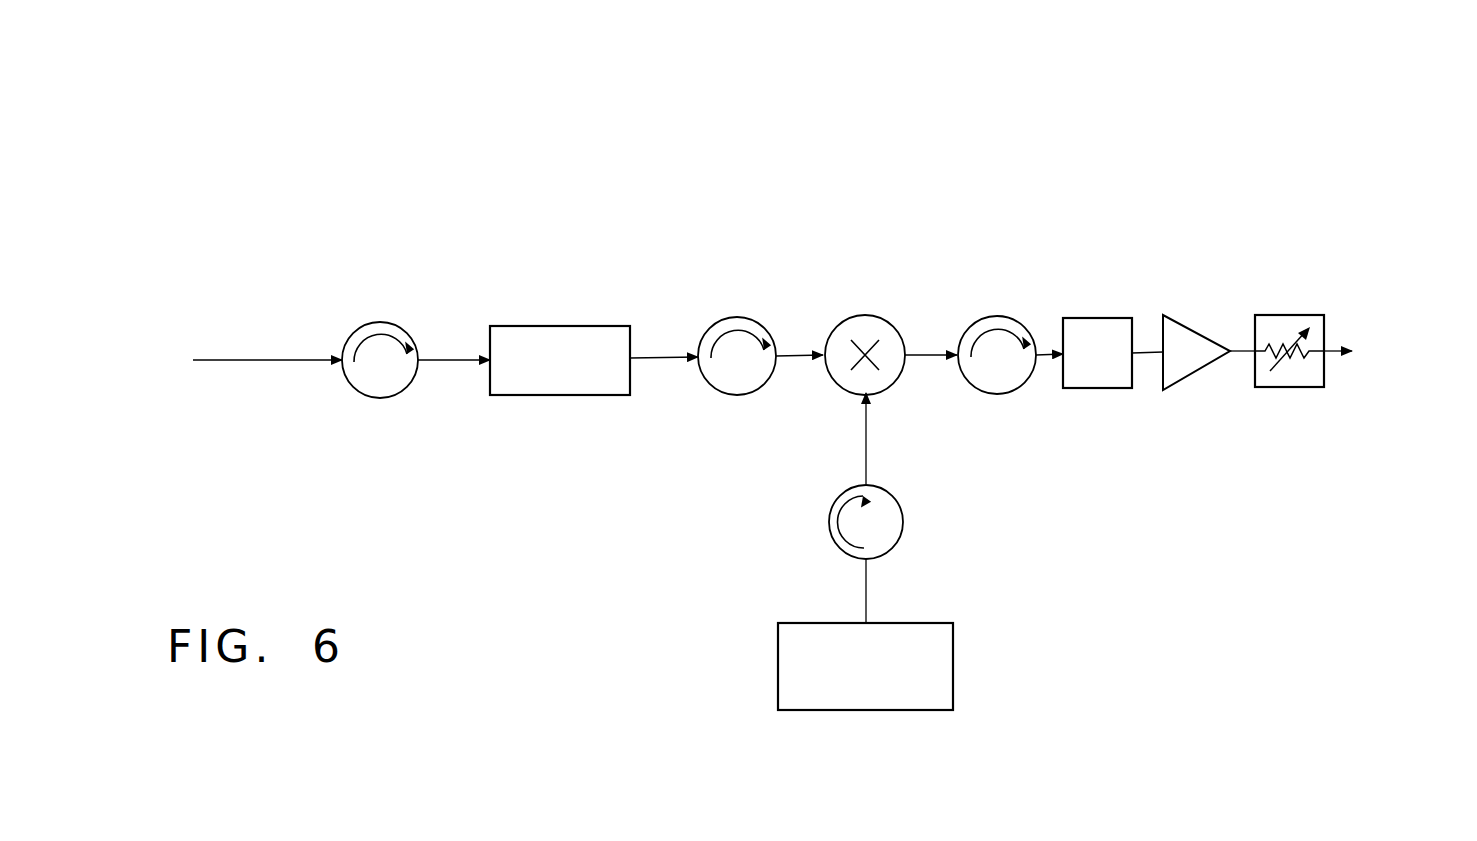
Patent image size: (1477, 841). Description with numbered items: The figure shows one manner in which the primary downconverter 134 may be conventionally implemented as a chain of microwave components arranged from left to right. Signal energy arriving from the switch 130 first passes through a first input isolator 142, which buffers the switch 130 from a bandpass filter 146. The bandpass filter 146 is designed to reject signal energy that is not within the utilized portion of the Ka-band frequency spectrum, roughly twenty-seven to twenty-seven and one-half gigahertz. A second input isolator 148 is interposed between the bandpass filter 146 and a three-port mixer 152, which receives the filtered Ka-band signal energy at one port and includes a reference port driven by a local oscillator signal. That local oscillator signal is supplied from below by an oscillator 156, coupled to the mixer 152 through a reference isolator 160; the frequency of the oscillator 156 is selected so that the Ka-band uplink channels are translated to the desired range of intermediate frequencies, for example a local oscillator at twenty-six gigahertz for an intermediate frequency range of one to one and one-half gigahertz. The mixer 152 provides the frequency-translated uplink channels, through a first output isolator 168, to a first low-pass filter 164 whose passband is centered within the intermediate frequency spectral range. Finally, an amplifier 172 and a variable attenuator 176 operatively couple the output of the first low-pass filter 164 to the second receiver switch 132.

The primary downconverter 134 is at (822, 130).
The switch 130 is at (218, 368).
The first input isolator 142 is at (396, 327).
The bandpass filter 146 is at (561, 326).
The second input isolator 148 is at (737, 317).
The three-port mixer 152 is at (866, 315).
The oscillator 156 is at (956, 621).
The reference isolator 160 is at (903, 500).
The first low-pass filter 164 is at (1095, 318).
The first output isolator 168 is at (997, 316).
The amplifier 172 is at (1171, 315).
The variable attenuator 176 is at (1280, 315).
The second receiver switch 132 is at (1389, 354).